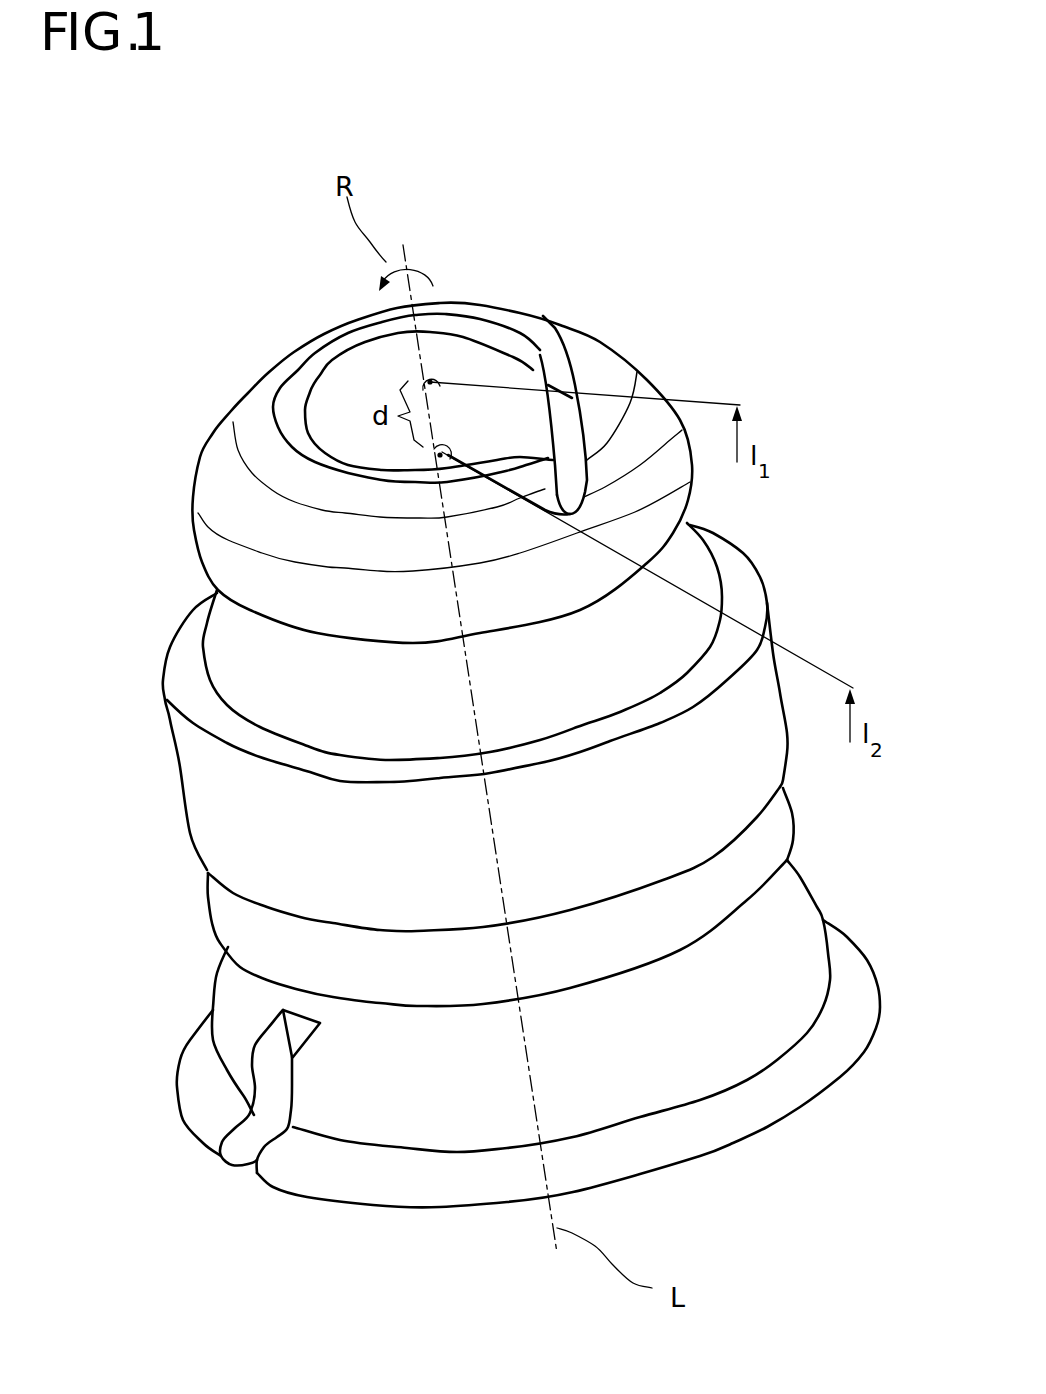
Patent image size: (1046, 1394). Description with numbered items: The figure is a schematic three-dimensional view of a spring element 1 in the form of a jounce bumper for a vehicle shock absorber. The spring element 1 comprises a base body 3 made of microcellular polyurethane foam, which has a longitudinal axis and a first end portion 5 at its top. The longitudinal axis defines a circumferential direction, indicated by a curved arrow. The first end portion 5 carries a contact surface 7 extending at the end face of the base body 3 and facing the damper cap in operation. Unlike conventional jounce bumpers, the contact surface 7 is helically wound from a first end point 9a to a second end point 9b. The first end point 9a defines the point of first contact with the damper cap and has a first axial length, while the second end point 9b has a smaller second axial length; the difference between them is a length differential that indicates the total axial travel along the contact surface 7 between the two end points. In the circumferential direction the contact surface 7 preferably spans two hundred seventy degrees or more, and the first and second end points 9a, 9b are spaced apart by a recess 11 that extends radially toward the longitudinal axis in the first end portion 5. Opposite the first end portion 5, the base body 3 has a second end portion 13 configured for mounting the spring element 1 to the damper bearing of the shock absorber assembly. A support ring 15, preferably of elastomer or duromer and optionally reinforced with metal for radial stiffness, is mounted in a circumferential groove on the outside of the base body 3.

The spring element 1 is at (190, 235).
The base body 3 is at (227, 650).
The first end portion 5 is at (133, 438).
The contact surface 7 is at (530, 333).
The first end point 9a is at (555, 382).
The second end point 9b is at (586, 463).
The recess 11 is at (690, 523).
The second end portion 13 is at (137, 1017).
The support ring 15 is at (223, 783).